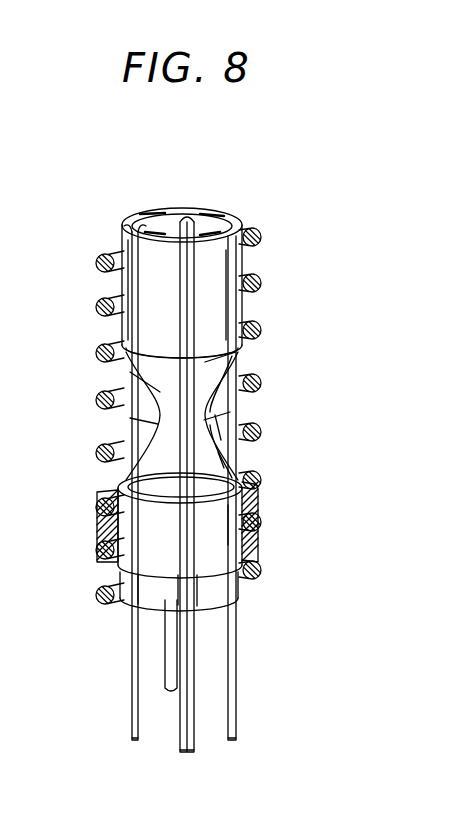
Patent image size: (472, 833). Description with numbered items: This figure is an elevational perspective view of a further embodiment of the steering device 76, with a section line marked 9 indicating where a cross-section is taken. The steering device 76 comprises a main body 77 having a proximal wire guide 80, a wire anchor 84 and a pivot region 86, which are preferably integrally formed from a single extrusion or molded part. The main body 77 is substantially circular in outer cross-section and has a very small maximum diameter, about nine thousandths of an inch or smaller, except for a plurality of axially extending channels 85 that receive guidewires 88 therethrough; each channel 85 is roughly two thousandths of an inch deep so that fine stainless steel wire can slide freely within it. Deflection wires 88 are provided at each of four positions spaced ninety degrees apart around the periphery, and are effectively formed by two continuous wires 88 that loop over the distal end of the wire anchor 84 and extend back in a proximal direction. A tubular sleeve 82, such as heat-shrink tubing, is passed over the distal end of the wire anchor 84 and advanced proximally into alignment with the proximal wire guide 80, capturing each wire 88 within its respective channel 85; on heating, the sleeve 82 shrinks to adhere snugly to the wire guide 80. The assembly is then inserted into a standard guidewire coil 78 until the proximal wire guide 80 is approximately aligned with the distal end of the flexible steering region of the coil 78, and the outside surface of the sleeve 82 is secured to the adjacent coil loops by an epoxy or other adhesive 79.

The steering device 76 is at (292, 330).
The main body 77 is at (212, 237).
The guidewire coil 78 is at (100, 355).
The adhesive 79 is at (260, 540).
The proximal wire guide 80 is at (224, 590).
The tubular sleeve 82 is at (145, 527).
The wire anchor 84 is at (228, 267).
The axially extending channels 85 is at (170, 262).
The pivot region 86 is at (203, 403).
The deflection wires 88 is at (162, 683).
The section line 9- 9 is at (82, 510).